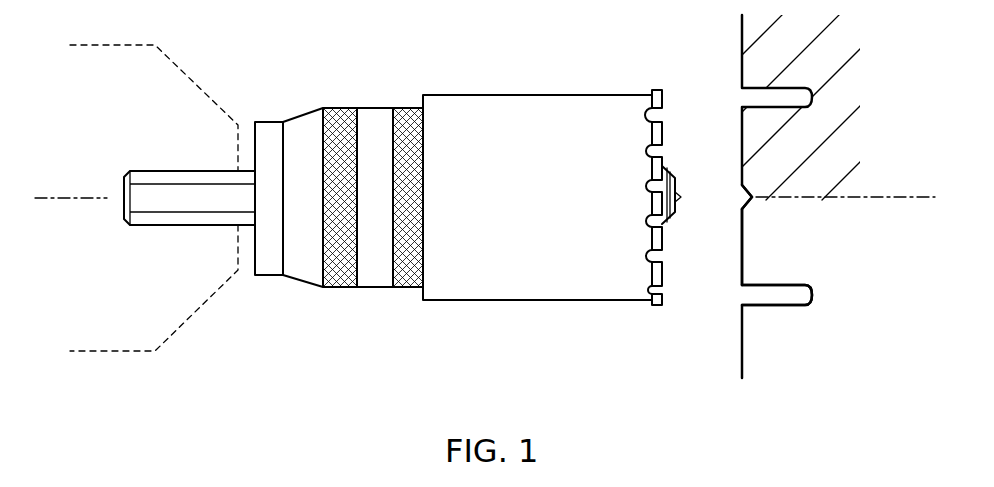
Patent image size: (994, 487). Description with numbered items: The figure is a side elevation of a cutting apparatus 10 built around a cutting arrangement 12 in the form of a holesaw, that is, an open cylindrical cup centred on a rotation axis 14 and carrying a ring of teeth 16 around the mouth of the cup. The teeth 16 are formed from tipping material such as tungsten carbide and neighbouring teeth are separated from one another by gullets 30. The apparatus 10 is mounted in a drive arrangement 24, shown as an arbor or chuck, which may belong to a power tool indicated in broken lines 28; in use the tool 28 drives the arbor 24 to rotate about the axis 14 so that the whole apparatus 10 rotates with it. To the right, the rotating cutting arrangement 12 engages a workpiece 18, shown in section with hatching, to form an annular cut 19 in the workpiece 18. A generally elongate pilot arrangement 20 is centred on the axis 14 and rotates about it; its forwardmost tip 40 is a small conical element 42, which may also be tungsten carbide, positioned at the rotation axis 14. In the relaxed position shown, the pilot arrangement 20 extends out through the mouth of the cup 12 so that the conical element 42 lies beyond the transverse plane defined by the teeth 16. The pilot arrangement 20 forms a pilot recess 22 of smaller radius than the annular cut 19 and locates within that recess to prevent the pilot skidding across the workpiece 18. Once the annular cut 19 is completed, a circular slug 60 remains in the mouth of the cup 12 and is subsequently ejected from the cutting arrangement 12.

The cutting apparatus 10 is at (326, 50).
The cutting arrangement 12 is at (552, 94).
The rotation axis 14 is at (75, 200).
The teeth 16 is at (664, 300).
The workpiece 18 is at (729, 370).
The annular cut 19 is at (796, 306).
The pilot arrangement 20 is at (681, 165).
The pilot recess 22 is at (748, 198).
The drive arrangement 24 is at (365, 288).
The power tool 28 is at (107, 352).
The gullets 30 is at (642, 258).
The forwardmost tip 40 is at (650, 186).
The conical element 42 is at (683, 198).
The circular slug 60 is at (746, 257).